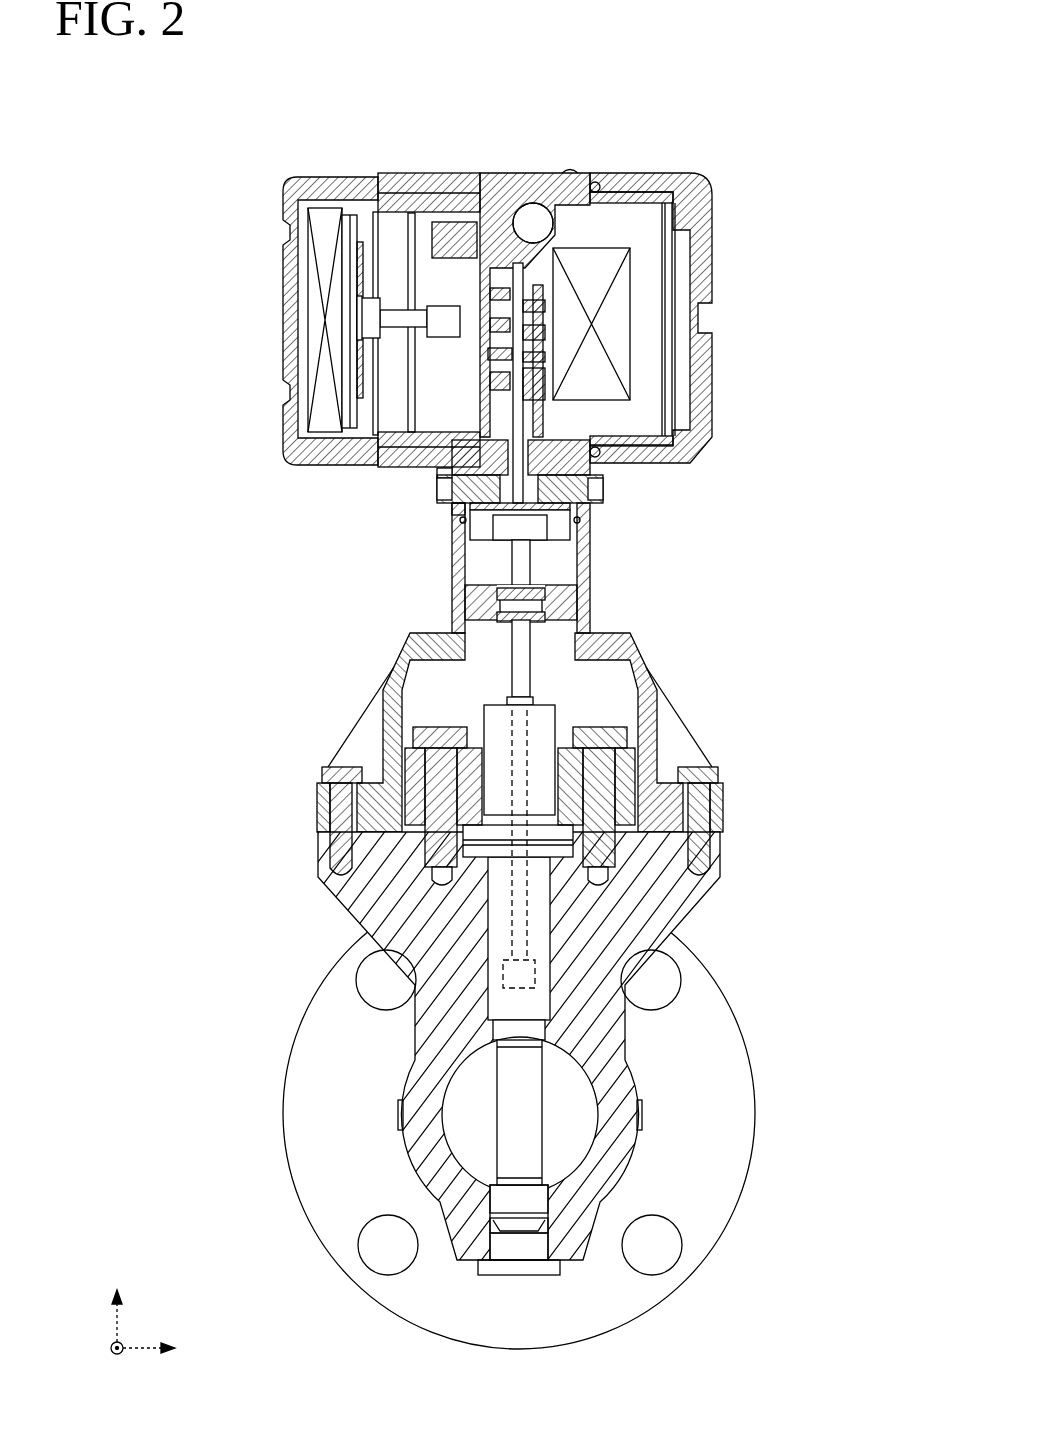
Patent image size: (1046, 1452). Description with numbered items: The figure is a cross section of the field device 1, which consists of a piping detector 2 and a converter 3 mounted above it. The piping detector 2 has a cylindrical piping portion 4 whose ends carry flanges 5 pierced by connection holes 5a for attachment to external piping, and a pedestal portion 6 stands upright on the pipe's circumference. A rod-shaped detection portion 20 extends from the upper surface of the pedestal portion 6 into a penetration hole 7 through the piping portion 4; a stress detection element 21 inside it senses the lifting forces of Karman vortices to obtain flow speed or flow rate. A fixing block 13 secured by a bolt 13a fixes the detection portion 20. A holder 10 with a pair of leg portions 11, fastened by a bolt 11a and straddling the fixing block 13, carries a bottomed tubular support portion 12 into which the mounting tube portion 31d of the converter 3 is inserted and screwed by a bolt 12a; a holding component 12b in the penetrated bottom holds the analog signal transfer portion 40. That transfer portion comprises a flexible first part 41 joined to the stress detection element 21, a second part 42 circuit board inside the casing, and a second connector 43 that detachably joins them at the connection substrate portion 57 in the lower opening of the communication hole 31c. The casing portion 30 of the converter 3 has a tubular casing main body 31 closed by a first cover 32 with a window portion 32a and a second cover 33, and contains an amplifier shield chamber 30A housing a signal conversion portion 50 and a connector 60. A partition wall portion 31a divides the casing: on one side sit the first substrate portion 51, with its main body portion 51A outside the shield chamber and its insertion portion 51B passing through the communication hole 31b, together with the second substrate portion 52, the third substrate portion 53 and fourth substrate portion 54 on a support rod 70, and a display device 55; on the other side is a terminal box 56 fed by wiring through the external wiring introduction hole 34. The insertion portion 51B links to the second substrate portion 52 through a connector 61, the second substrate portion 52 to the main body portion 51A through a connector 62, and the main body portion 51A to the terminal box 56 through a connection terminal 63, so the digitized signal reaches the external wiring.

The field device 1 is at (210, 150).
The piping detector 2 is at (501, 984).
The converter 3 is at (300, 176).
The piping portion 4 is at (470, 1222).
The flanges 5 is at (288, 1095).
The connection holes 5a is at (640, 1240).
The pedestal portion 6 is at (322, 868).
The penetration hole 7 is at (490, 935).
The holder 10 is at (388, 655).
The leg portions 11 is at (383, 700).
The bolt 11a is at (330, 772).
The support portion 12 is at (455, 560).
The bolt 12a is at (600, 482).
The holding component 12b is at (500, 596).
The fixing block 13 is at (420, 745).
The bolt 13a is at (412, 745).
The detection portion 20 is at (548, 1080).
The stress detection element 21 is at (535, 975).
The casing portion 30 is at (480, 321).
The amplifier shield chamber 30A is at (440, 462).
The casing main body 31 is at (480, 326).
The partition wall portion 31a is at (632, 300).
The communication hole 31b is at (602, 380).
The communication hole 31c is at (455, 490).
The mounting tube portion 31d is at (453, 512).
The first cover 32 is at (352, 215).
The window portion 32a is at (308, 232).
The second cover 33 is at (640, 190).
The external wiring introduction hole 34 is at (547, 205).
The analog signal transfer portion 40 is at (603, 559).
The first part 41 is at (530, 572).
The second part 42 is at (572, 520).
The second connector 43 is at (548, 530).
The signal conversion portion 50 is at (555, 398).
The first substrate portion 51 is at (347, 266).
The main body portion 51A is at (495, 355).
The insertion portion 51B is at (347, 389).
The second substrate portion 52 is at (412, 300).
The third substrate portion 53 is at (376, 240).
The fourth substrate portion 54 is at (360, 250).
The display device 55 is at (305, 322).
The terminal box 56 is at (648, 270).
The connection substrate portion 57 is at (485, 578).
The connector 60 is at (615, 432).
The connector 61 is at (440, 482).
The connector 62 is at (556, 300).
The connection terminal 63 is at (545, 332).
The support rod 70 is at (380, 318).